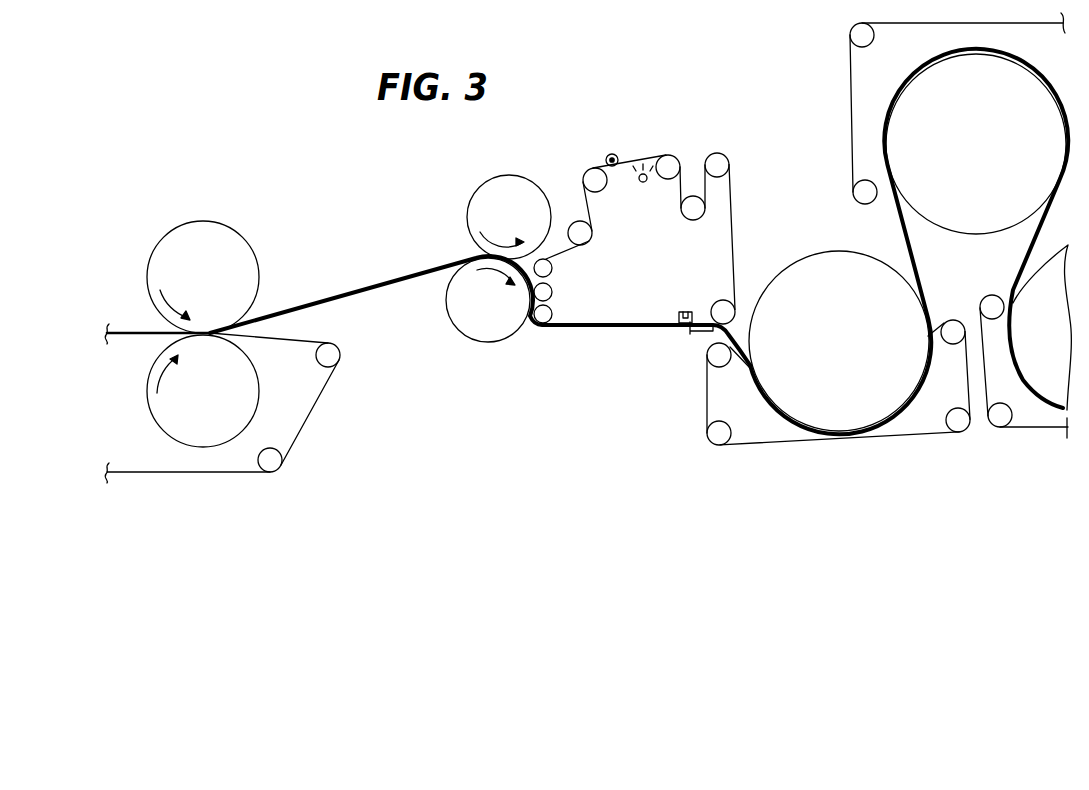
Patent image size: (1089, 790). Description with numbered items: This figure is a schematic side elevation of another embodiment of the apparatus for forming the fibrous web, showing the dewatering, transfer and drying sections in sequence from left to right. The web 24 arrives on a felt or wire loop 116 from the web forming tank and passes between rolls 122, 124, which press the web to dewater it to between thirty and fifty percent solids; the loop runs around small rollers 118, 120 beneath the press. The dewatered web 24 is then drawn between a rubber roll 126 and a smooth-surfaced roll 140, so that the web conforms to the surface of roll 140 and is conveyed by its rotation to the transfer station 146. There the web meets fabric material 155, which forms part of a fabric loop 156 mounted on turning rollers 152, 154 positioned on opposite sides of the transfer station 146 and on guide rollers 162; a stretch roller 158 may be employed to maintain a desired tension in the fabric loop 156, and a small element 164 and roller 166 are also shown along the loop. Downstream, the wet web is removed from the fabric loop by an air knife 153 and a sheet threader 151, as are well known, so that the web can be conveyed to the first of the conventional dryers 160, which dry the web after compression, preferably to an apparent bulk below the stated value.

The web 24 is at (378, 283).
The felt or wire loop 116 is at (326, 390).
The guide roller 118 is at (335, 357).
The guide roller 120 is at (279, 466).
The press roll 122 is at (225, 238).
The press roll 124 is at (252, 392).
The rubber roll 126 is at (502, 180).
The smooth-surfaced roll 140 is at (474, 334).
The transfer station 146 is at (556, 294).
The sheet threader 151 is at (692, 333).
The turning roller 152 is at (542, 327).
The air knife 153 is at (680, 311).
The turning roller 154 is at (552, 270).
The fabric material 155 is at (587, 209).
The fabric loop 156 is at (731, 185).
The stretch roller 158 is at (720, 302).
The dryers 160 is at (1016, 70).
The guide roller 162 is at (574, 230).
The lamp sensor 164 is at (647, 181).
The nip roller 166 is at (606, 158).